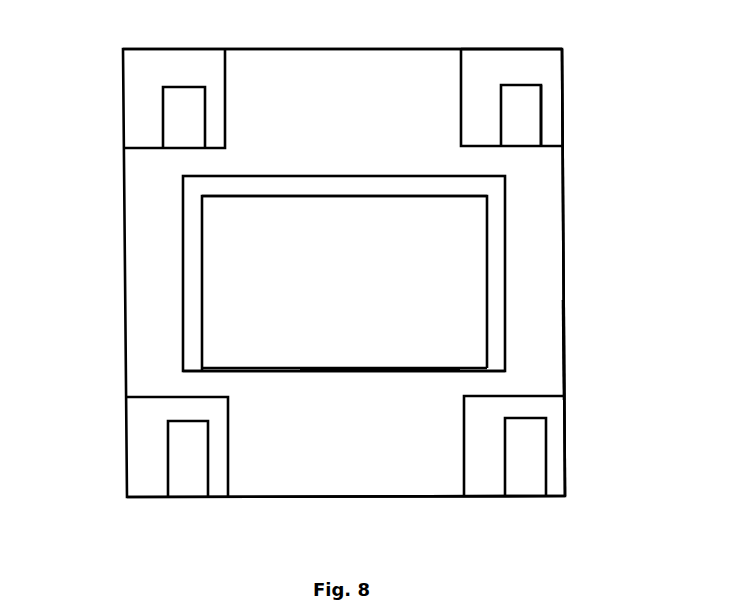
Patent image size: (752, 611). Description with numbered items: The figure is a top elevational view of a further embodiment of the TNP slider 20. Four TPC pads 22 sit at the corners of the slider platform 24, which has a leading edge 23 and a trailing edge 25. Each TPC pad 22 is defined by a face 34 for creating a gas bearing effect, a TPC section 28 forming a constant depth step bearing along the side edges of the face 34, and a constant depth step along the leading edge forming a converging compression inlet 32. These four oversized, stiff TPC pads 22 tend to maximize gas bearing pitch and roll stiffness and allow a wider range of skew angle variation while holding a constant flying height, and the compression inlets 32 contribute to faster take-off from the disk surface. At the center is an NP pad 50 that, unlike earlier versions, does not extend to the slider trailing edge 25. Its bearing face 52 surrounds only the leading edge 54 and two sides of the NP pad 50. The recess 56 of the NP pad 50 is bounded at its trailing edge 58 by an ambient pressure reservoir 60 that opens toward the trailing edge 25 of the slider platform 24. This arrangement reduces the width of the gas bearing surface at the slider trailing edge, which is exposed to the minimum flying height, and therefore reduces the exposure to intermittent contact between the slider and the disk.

The TNP slider 20 is at (65, 278).
The TPC pad 22 is at (123, 110).
The leading edge 23 is at (341, 49).
The slider platform 24 is at (563, 270).
The trailing edge 25 is at (357, 497).
The TPC section 28 is at (548, 92).
The compression inlet 32 is at (517, 63).
The face 34 is at (527, 132).
The NP pad 50 is at (505, 238).
The bearing face 52 is at (497, 307).
The leading edge 54 is at (344, 196).
The recess 56 is at (377, 357).
The trailing edge 58 is at (313, 371).
The ambient pressure reservoir 60 is at (552, 357).